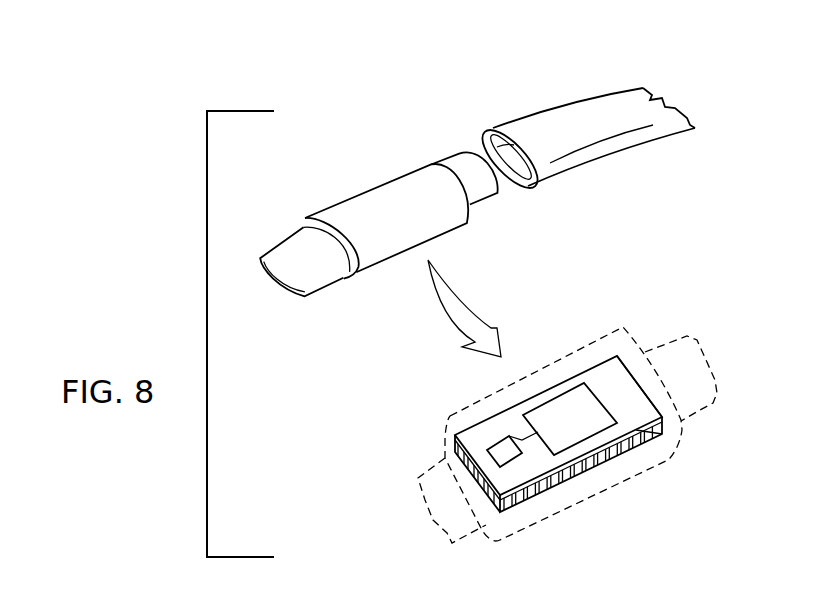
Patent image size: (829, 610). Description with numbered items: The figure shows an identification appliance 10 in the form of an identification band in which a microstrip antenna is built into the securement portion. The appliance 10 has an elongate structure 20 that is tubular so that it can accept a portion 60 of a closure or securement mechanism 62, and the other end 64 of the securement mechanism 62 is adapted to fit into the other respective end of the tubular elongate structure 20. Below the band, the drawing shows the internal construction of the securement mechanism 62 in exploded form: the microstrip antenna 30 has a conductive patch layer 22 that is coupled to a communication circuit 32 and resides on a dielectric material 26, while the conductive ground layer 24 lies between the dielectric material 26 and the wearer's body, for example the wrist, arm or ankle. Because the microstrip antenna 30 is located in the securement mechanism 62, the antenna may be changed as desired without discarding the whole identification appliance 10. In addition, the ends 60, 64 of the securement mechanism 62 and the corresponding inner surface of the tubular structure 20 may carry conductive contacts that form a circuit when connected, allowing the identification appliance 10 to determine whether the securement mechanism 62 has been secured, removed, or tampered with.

The identification appliance 10 is at (536, 78).
The elongate structure 20 is at (603, 132).
The conductive patch layer 22 is at (578, 430).
The conductive ground layer 24 is at (648, 443).
The dielectric material 26 is at (663, 422).
The microstrip antenna 30 is at (553, 373).
The communication circuit 32 is at (510, 447).
The portion of the securement mechanism 60 is at (443, 162).
The securement mechanism 62 is at (407, 222).
The other end of the securement mechanism 64 is at (293, 247).